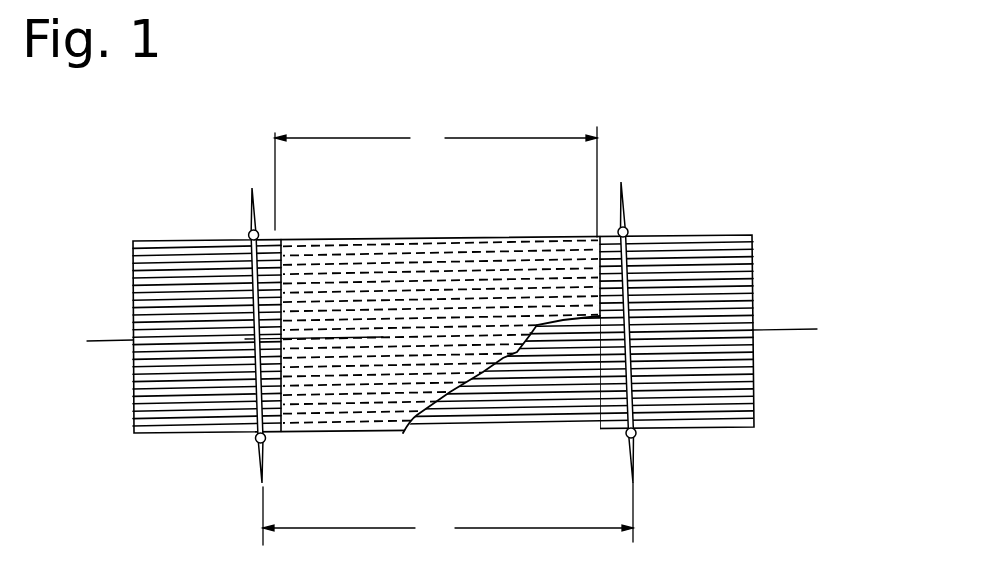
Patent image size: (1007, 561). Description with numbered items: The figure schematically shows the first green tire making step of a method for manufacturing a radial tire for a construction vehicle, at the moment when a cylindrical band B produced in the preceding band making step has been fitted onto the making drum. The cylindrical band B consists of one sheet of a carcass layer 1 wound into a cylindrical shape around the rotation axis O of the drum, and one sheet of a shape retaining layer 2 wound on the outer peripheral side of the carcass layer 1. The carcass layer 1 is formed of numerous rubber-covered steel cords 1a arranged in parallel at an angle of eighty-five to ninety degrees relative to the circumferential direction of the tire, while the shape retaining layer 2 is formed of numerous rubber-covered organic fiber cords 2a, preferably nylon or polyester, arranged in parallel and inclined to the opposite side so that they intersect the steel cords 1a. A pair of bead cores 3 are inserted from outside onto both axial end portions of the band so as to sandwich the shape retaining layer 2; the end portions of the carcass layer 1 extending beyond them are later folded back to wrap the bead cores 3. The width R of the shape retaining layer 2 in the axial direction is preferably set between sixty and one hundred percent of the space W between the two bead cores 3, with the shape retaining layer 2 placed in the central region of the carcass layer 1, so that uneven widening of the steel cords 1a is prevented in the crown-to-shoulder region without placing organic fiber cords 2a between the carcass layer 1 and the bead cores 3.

The carcass layer 1 is at (728, 234).
The steel cords 1a is at (172, 420).
The shape retaining layer 2 is at (530, 233).
The organic fiber cords 2a is at (362, 410).
The bead core 3 is at (248, 235).
The cylindrical band B is at (812, 196).
The rotation axis O is at (797, 330).
The width of the shape retaining layer R is at (436, 181).
The space between the bead cores W is at (448, 514).